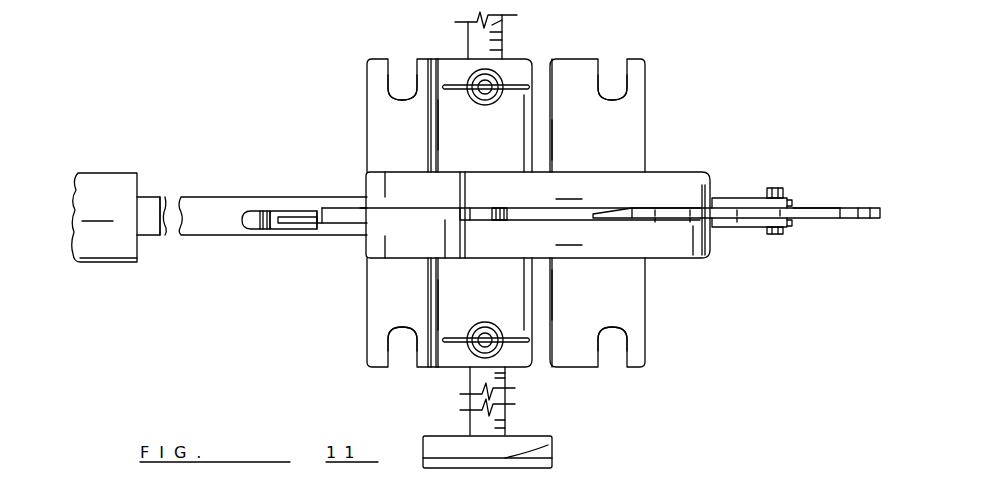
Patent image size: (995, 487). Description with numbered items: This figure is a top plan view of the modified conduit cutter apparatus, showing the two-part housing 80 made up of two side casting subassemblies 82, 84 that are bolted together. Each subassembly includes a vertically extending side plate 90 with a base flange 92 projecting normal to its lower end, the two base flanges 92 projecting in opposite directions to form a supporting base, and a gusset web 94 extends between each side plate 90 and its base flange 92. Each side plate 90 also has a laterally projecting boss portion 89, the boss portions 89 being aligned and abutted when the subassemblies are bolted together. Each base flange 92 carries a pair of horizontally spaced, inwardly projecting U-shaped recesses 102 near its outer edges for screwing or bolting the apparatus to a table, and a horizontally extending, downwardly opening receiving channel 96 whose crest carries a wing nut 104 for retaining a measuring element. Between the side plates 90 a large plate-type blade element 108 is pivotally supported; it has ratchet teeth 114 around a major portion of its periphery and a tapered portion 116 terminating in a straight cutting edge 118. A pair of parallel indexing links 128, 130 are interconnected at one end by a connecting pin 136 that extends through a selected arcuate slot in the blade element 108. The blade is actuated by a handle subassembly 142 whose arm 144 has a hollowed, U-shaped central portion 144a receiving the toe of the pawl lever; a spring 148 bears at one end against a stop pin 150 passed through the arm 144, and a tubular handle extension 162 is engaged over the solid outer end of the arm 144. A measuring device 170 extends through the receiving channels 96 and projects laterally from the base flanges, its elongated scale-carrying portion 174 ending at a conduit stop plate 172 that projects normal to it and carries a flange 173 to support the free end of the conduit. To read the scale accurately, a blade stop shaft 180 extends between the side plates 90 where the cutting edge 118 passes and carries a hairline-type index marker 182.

The two-part housing 80 is at (705, 160).
The side casting subassembly 82 is at (656, 184).
The side casting subassembly 84 is at (664, 238).
The boss portion 89 is at (441, 215).
The side plate 90 is at (585, 213).
The base flange 92 is at (384, 127).
The gusset web 94 is at (545, 117).
The receiving channel 96 is at (460, 66).
The U-shaped recess 102 is at (403, 70).
The wing nut 104 is at (517, 90).
The blade element 108 is at (810, 220).
The ratchet teeth 114 is at (864, 206).
The tapered portion 116 is at (634, 221).
The cutting edge 118 is at (596, 212).
The indexing link 128 is at (722, 222).
The indexing link 130 is at (713, 196).
The connecting pin 136 is at (781, 189).
The handle subassembly 142 is at (216, 236).
The arm 144 is at (190, 200).
The central portion 144a is at (337, 205).
The spring 148 is at (278, 232).
The stop pin 150 is at (242, 220).
The handle extension 162 is at (104, 217).
The measuring device 170 is at (503, 43).
The conduit stop plate 172 is at (556, 447).
The flange 173 is at (450, 443).
The scale-carrying portion 174 is at (506, 17).
The blade stop shaft 180 is at (494, 209).
The index marker 182 is at (495, 223).